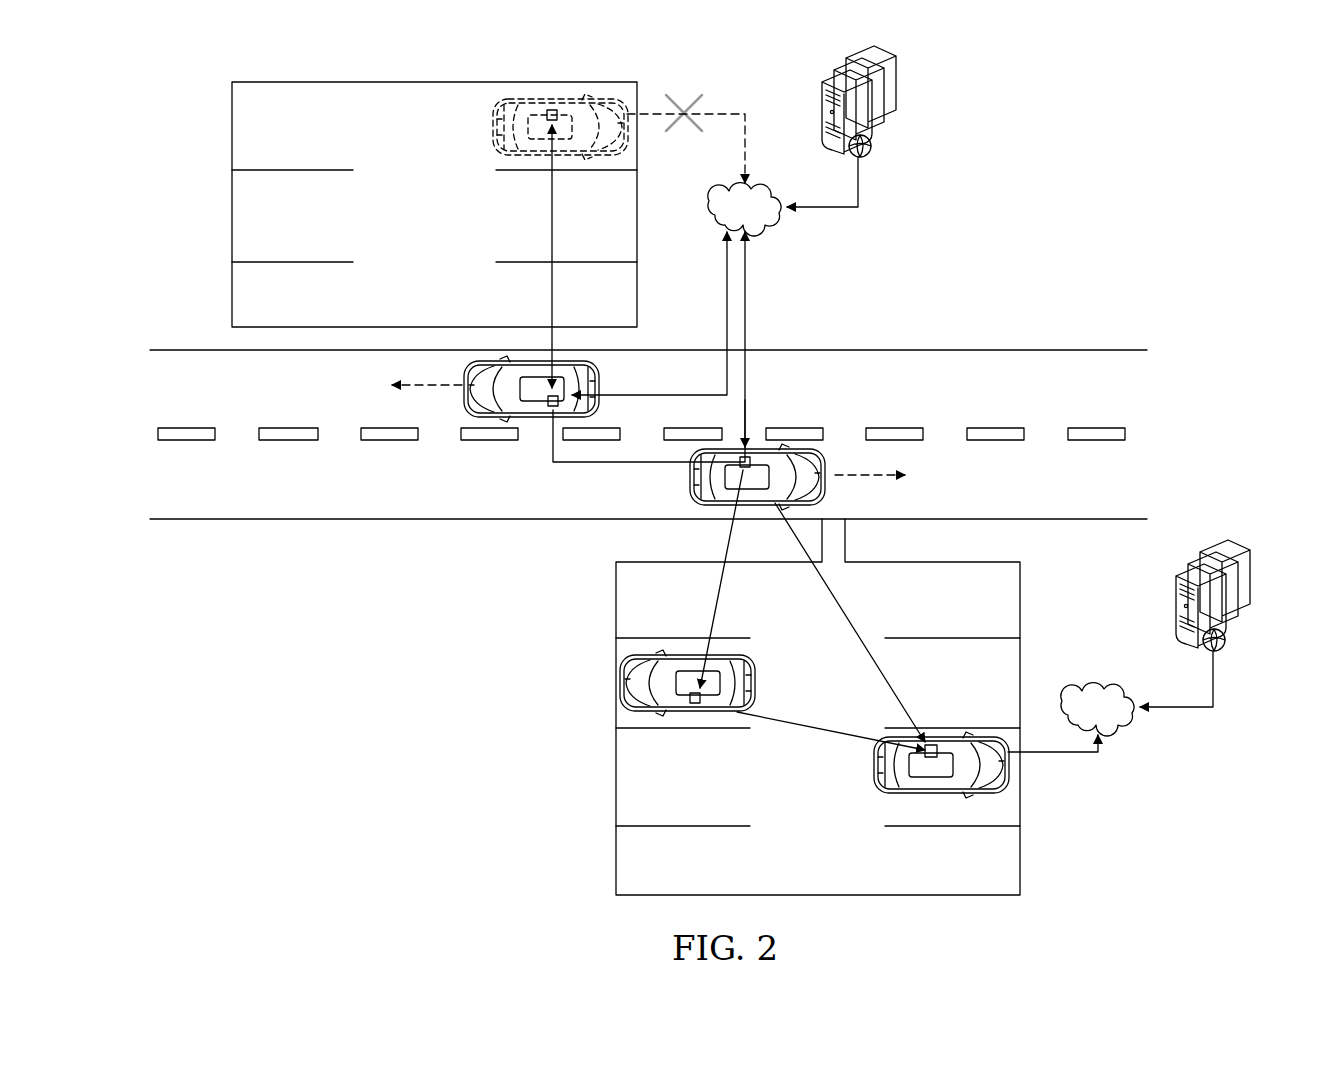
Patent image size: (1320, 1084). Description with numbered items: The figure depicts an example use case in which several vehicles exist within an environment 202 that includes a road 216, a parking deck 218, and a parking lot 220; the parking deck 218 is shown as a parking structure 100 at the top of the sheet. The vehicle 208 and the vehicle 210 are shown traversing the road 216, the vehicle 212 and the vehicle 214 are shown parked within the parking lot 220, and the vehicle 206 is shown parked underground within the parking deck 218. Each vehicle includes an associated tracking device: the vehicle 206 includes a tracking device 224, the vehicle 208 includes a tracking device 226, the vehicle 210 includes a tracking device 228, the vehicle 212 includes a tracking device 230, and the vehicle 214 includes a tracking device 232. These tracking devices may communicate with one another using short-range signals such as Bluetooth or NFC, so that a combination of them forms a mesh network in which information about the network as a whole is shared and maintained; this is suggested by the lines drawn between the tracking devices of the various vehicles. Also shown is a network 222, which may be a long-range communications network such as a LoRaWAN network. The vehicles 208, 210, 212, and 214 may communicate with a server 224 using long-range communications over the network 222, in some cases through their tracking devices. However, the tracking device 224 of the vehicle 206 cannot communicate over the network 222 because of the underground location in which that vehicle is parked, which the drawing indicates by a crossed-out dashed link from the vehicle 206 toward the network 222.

The parking lot 100 is at (243, 80).
The environment 202 is at (1062, 201).
The vehicle 206 is at (500, 128).
The vehicle 208 is at (600, 390).
The vehicle 210 is at (692, 475).
The vehicle 212 is at (622, 680).
The vehicle 214 is at (1010, 770).
The road 216 is at (915, 362).
The parking deck 218 is at (250, 298).
The parking lot 220 is at (995, 600).
The network 222 is at (921, 459).
The server 224 is at (556, 108).
The tracking device 226 is at (550, 410).
The tracking device 228 is at (750, 455).
The tracking device 230 is at (695, 708).
The tracking device 232 is at (934, 745).